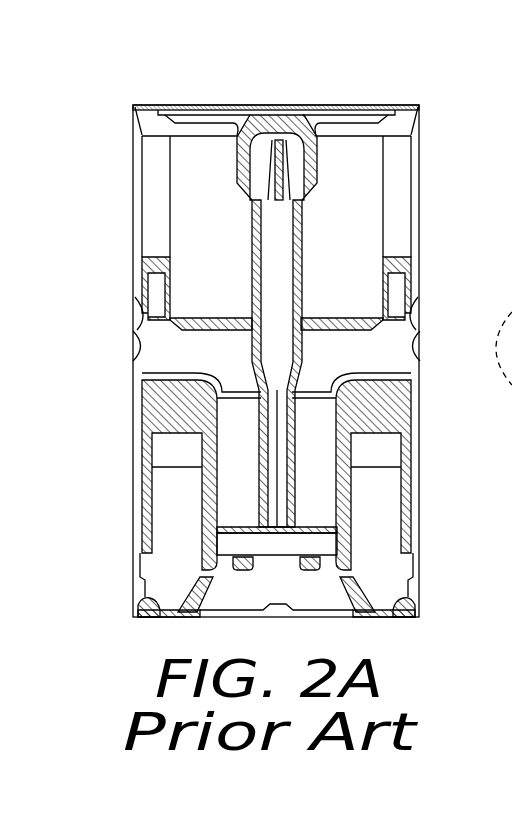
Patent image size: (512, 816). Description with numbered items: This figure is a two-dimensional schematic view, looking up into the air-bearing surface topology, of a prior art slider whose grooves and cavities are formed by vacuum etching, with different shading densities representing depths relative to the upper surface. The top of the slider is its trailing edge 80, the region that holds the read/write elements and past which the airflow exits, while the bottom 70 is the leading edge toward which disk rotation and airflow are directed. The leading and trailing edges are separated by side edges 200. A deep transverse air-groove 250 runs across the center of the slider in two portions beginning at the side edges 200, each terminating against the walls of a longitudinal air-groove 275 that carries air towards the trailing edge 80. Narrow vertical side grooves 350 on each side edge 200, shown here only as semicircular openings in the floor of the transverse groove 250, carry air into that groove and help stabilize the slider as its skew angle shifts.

The trailing edge 80 is at (353, 104).
The side edges 200 is at (133, 190).
The longitudinal air-groove 275 is at (283, 236).
The transverse air-groove 250 is at (405, 325).
The side grooves 350 is at (140, 348).
The leading edge 70 is at (149, 618).